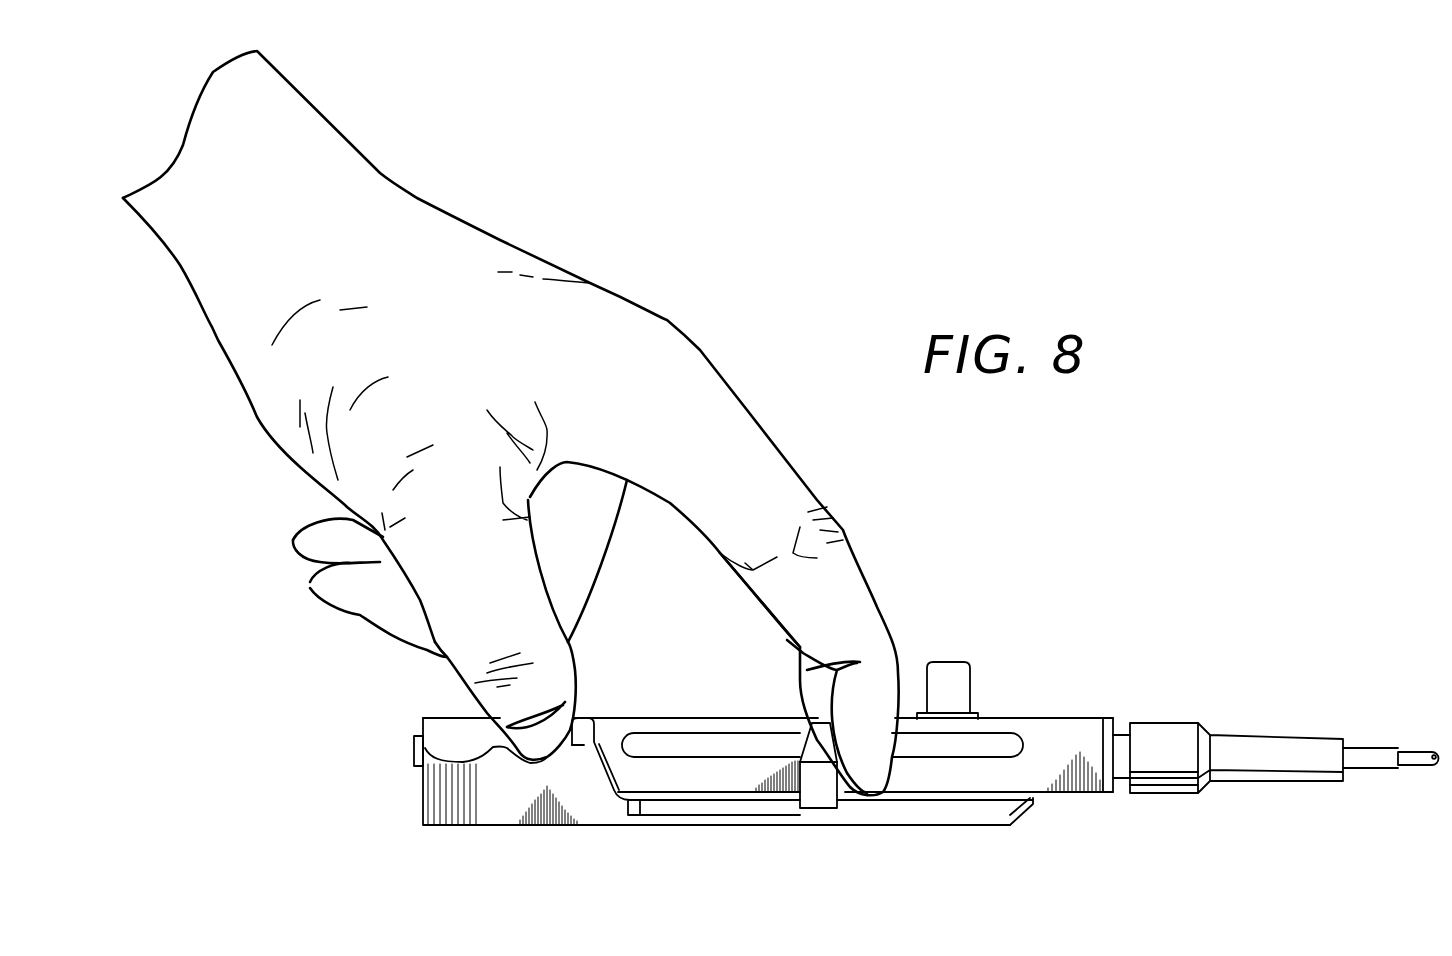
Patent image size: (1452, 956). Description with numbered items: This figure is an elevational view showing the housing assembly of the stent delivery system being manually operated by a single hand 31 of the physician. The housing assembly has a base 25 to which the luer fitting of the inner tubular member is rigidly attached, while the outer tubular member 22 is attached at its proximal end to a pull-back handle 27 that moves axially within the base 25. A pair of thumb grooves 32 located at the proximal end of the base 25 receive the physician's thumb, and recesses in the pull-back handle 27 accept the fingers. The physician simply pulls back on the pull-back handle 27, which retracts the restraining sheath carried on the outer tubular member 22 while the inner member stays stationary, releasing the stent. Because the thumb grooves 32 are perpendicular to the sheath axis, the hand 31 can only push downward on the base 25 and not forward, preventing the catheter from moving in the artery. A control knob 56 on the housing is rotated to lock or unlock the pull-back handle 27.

The outer tubular member 22 is at (1412, 750).
The base 25 is at (605, 826).
The pull-back handle 27 is at (822, 790).
The hand 31 is at (702, 410).
The thumb grooves 32 is at (541, 760).
The control knob 56 is at (970, 677).